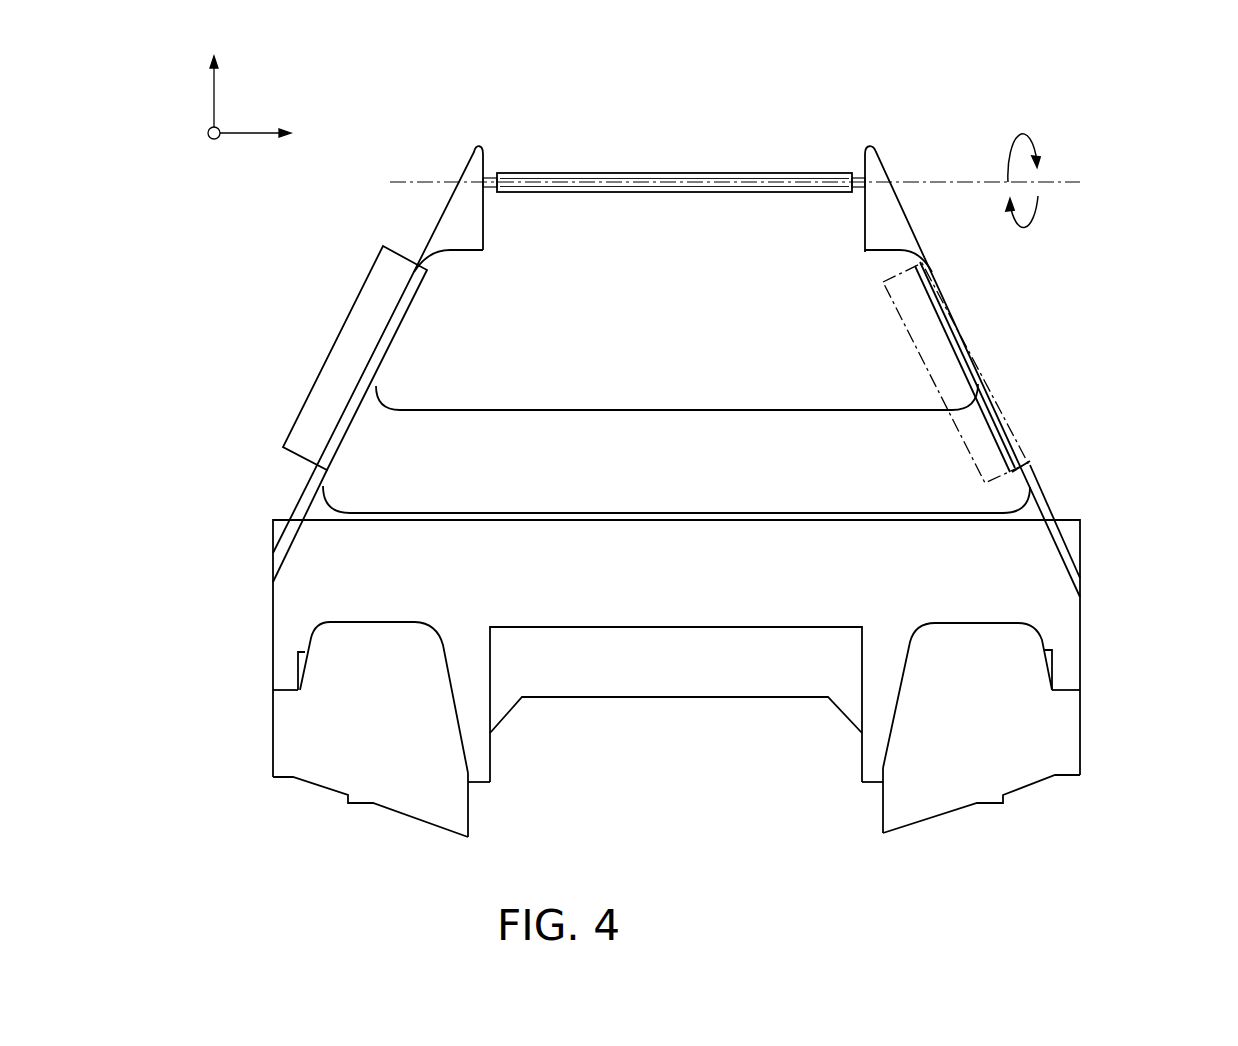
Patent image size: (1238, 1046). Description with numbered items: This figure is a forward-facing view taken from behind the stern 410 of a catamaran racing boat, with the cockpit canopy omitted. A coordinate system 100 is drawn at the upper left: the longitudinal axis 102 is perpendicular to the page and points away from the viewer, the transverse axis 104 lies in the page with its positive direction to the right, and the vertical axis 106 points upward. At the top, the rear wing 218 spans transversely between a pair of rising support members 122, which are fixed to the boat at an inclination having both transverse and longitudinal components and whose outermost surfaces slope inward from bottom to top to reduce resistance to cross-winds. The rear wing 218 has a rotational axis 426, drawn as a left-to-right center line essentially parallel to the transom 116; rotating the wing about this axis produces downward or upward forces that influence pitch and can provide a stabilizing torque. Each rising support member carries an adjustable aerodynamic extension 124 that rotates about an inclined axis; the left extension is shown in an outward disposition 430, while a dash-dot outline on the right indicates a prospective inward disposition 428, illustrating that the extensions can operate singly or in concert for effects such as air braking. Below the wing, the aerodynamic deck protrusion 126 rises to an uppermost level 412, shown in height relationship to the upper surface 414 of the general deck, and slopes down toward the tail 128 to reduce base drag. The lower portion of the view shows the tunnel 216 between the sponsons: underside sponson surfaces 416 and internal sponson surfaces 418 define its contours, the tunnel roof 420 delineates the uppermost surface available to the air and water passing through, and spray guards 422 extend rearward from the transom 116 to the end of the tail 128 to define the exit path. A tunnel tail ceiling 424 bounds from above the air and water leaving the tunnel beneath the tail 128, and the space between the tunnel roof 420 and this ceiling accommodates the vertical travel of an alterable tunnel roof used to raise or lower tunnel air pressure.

The coordinate system 100 is at (283, 122).
The longitudinal axis 102 is at (212, 139).
The transverse axis 104 is at (242, 135).
The vertical axis 106 is at (216, 107).
The transom 116 is at (627, 653).
The rising support members 122 is at (1012, 371).
The adjustable aerodynamic extensions 124 is at (351, 364).
The aerodynamic deck protrusion 126 is at (547, 410).
The tail 128 is at (1121, 528).
The tunnel 216 is at (627, 707).
The rear wing 218 is at (728, 177).
The stern 410 is at (653, 506).
The uppermost level 412 is at (676, 409).
The upper surface 414 is at (816, 513).
The underside sponson surfaces 416 is at (396, 815).
The internal sponson surfaces 418 is at (473, 800).
The tunnel roof 420 is at (722, 698).
The spray guards 422 is at (452, 678).
The tunnel tail ceiling 424 is at (676, 674).
The rotational axis 426 is at (933, 180).
The inward disposition 428 is at (901, 318).
The outward disposition 430 is at (310, 392).